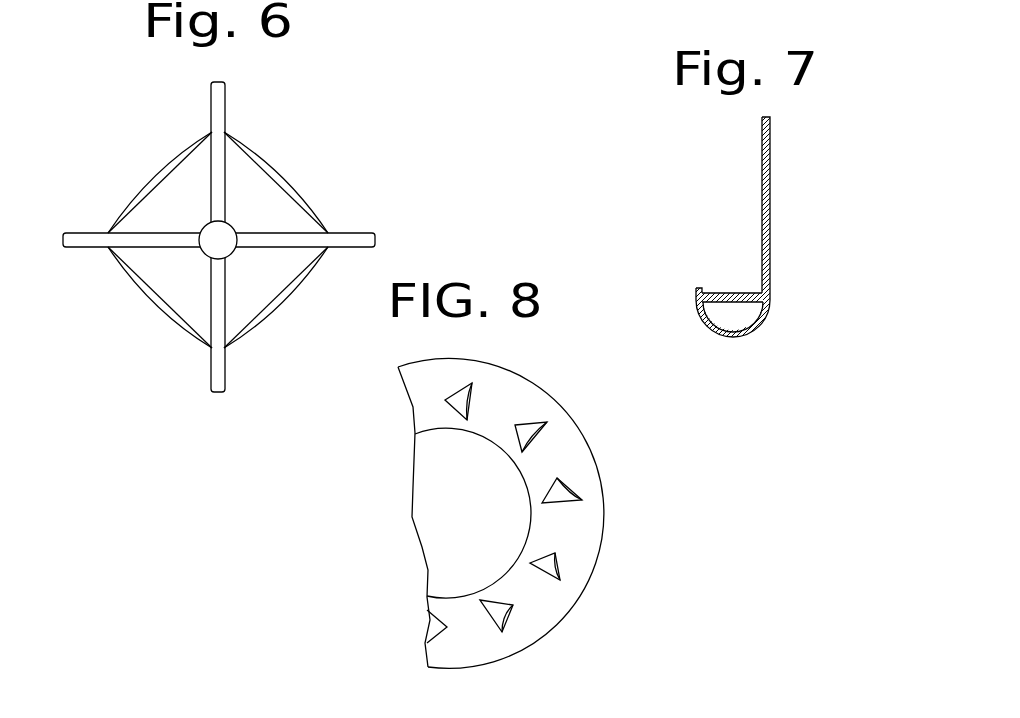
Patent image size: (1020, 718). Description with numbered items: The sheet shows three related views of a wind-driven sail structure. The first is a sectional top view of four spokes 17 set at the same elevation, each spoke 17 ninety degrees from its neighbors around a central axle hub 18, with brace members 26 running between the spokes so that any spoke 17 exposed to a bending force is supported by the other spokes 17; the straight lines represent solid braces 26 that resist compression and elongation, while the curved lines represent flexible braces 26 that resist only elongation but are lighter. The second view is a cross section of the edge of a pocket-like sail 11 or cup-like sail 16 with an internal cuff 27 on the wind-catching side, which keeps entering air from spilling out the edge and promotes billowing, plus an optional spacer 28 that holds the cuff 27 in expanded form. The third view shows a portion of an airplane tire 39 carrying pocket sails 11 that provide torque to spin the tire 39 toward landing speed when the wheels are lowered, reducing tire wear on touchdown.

In FIG. 7, the pocket-like sail 11 is at (823, 208).
In FIG. 8, the pocket-like sail 11 is at (445, 400).
In FIG. 7, the cup-like sail 16 is at (770, 216).
In FIG. 6, the spoke 17 is at (213, 118).
In FIG. 6, the central hub 18 is at (238, 231).
In FIG. 6, the brace member 26 is at (155, 178).
In FIG. 7, the internal cuff 27 is at (697, 322).
In FIG. 7, the spacer 28 is at (730, 293).
In FIG. 8, the tire 39 is at (610, 515).